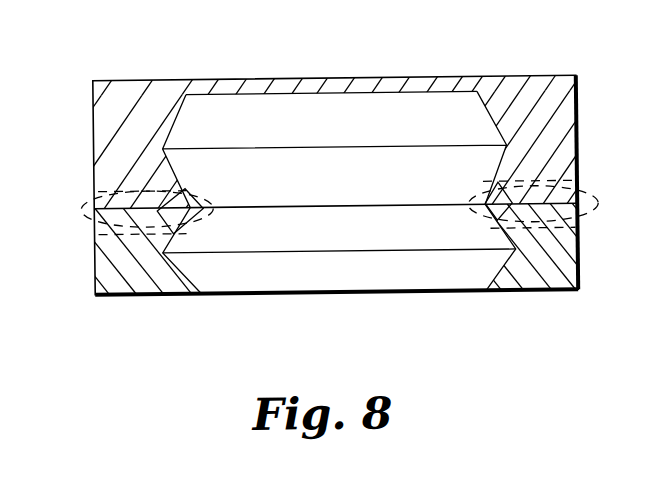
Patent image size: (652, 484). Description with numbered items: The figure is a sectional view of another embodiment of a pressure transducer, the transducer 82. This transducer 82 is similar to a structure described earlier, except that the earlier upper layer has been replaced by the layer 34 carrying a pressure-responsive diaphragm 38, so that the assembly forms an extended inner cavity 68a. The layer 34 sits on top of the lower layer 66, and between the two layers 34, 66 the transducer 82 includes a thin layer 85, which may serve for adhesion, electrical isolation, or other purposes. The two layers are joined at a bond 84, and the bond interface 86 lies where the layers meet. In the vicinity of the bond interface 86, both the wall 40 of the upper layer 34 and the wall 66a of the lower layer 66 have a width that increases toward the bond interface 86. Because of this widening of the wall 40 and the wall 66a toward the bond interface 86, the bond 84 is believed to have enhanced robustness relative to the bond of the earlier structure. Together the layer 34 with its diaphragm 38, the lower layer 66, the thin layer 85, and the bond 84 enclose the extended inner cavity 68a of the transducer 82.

The transducer 82 is at (335, 154).
The layer 34 is at (606, 176).
The pressure-responsive diaphragm 38 is at (336, 121).
The wall 40 is at (335, 141).
The layer 66 is at (346, 263).
The wall 66a is at (365, 281).
The extended inner cavity 68a is at (340, 304).
The bond 84 is at (329, 185).
The thin layer 85 is at (335, 193).
The bond interface 86 is at (332, 233).